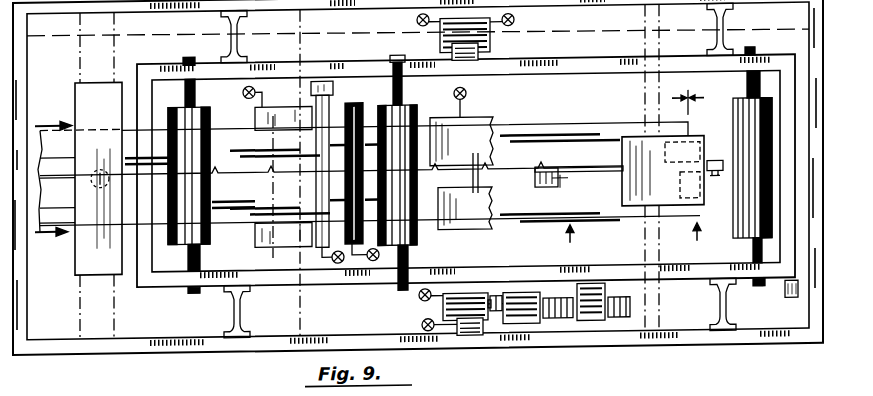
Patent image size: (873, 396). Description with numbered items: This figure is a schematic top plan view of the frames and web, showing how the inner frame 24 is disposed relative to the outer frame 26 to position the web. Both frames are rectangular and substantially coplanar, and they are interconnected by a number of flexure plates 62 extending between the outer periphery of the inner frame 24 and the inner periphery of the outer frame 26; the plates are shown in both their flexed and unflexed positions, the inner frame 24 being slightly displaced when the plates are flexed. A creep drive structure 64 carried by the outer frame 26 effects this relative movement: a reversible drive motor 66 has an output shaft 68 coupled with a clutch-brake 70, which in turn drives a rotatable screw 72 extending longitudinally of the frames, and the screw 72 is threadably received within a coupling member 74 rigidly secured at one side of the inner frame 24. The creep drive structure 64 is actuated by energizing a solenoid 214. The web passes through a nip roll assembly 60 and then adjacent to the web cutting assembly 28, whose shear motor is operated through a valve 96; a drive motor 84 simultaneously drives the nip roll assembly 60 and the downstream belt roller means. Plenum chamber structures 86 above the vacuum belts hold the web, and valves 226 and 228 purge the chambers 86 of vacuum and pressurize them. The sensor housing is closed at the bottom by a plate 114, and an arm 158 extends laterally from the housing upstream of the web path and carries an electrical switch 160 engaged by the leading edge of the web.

The outer frame 26 is at (177, 350).
The inner frame 24 is at (175, 285).
The flexure plates 62 is at (191, 59).
The nip roll assembly 60 is at (212, 238).
The web cutting assembly 28 is at (331, 118).
The valve 96 is at (335, 270).
The valve 226 is at (372, 268).
The drive motor 84 is at (490, 45).
The valve 228 is at (481, 98).
The plenum chamber structures 86 is at (490, 130).
The arm 158 is at (611, 176).
The electrical switch 160 is at (540, 190).
The plate 114 is at (622, 193).
The reversible drive motor 66 is at (455, 299).
The creep drive structure 64 is at (500, 302).
The output shaft 68 is at (493, 334).
The clutch-brake 70 is at (530, 335).
The rotatable screw 72 is at (633, 312).
The coupling member 74 is at (592, 292).
The solenoid 214 is at (421, 332).